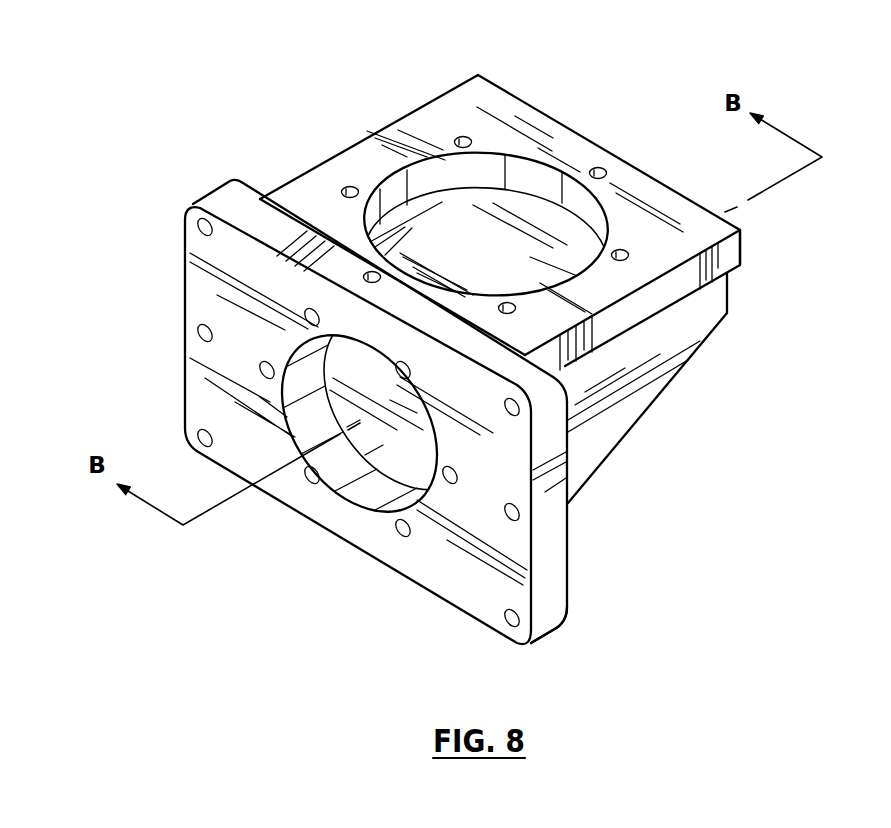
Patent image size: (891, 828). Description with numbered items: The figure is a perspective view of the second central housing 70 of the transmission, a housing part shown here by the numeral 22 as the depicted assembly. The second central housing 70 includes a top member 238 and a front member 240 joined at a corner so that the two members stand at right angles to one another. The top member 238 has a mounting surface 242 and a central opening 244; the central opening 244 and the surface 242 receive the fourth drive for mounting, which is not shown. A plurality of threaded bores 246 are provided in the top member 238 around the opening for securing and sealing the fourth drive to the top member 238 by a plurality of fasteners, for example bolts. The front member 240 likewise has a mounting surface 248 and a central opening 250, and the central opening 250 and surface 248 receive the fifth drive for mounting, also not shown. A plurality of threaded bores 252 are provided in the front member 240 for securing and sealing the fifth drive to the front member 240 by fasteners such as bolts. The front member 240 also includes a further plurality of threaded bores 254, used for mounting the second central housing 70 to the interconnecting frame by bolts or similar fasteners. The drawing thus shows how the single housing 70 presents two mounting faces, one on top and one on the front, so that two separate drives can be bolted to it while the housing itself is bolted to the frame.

The mounting bracket assembly 22 is at (620, 116).
The second central housing 70 is at (624, 438).
The top member 238 is at (745, 248).
The front member 240 is at (552, 633).
The mounting surface 242 is at (493, 93).
The central opening 244 is at (445, 215).
The threaded bores 246 is at (632, 255).
The mounting surface 248 is at (215, 410).
The central opening 250 is at (358, 497).
The threaded bores 252 is at (398, 540).
The threaded bores 254 is at (508, 618).